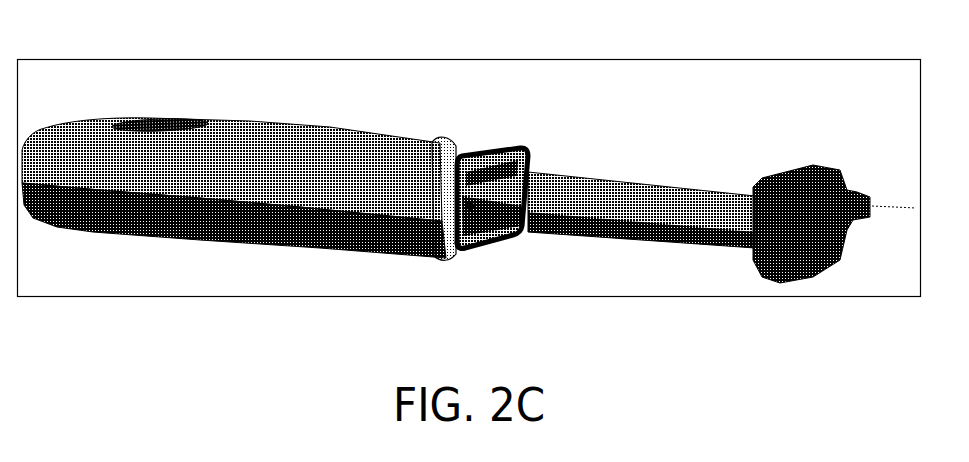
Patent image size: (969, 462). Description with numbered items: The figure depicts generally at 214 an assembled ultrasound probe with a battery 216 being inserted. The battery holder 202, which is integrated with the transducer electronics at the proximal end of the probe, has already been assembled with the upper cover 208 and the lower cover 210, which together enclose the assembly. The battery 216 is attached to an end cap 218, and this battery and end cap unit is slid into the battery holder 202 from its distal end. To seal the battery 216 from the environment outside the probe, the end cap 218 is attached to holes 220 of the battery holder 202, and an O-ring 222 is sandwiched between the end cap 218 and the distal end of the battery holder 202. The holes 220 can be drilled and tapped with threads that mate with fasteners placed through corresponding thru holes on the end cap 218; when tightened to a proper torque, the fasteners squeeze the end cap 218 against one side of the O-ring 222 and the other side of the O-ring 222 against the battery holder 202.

The battery holder 202 is at (510, 143).
The upper cover 208 is at (282, 125).
The lower cover 210 is at (283, 248).
The assembled ultrasound probe 214 is at (476, 58).
The battery 216 is at (660, 186).
The end cap 218 is at (807, 167).
The holes 220 is at (458, 250).
The O-ring 222 is at (490, 247).